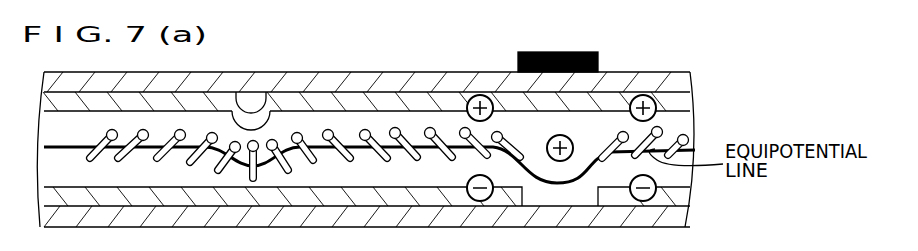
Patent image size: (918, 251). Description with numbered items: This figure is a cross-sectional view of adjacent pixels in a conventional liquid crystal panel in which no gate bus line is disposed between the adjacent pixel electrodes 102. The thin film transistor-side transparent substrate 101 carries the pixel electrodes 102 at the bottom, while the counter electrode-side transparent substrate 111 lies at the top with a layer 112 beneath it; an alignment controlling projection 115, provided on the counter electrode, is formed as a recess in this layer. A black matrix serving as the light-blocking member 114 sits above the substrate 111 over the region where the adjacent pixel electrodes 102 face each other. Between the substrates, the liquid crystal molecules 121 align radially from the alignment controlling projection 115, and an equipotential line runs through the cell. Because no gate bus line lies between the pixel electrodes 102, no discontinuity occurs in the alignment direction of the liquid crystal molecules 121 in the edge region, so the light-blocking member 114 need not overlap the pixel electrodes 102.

The counter electrode-side transparent substrate 111 is at (672, 80).
The first electrode 112 is at (678, 101).
The alignment controlling projection 115 is at (254, 117).
The light-blocking member 114 is at (558, 52).
The liquid crystal molecules 121 is at (652, 134).
The pixel electrodes 102 is at (672, 195).
The thin film transistor-side transparent substrate 101 is at (672, 216).